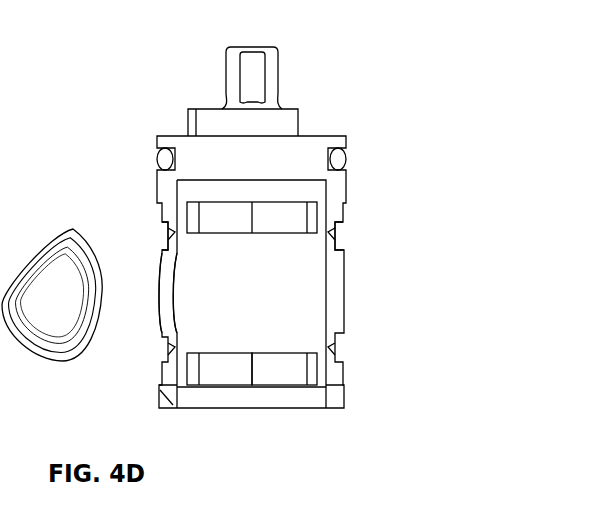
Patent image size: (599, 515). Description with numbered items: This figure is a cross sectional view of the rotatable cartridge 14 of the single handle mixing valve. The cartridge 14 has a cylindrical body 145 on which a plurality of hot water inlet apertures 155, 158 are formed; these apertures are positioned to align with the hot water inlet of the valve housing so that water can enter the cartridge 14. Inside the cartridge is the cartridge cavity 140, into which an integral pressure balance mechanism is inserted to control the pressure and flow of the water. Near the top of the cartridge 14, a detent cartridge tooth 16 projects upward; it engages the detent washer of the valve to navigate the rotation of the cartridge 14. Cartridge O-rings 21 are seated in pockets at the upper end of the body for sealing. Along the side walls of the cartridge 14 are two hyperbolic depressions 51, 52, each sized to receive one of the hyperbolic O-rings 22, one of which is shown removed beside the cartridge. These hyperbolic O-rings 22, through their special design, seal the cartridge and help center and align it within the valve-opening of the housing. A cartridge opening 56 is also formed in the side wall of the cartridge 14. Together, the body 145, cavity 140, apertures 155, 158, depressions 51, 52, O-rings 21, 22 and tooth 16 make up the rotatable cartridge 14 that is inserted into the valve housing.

The rotatable cartridge 14 is at (128, 76).
The detent cartridge tooth 16 is at (200, 120).
The cartridge O-rings 21 is at (343, 163).
The hyperbolic O-rings 22 is at (50, 237).
The hyperbolic depression 51 is at (162, 242).
The hyperbolic depression 52 is at (340, 237).
The cartridge opening 56 is at (175, 297).
The cartridge cavity 140 is at (283, 302).
The cylindrical body 145 is at (332, 398).
The hot water inlet aperture 155 is at (213, 375).
The hot water inlet aperture 158 is at (288, 375).